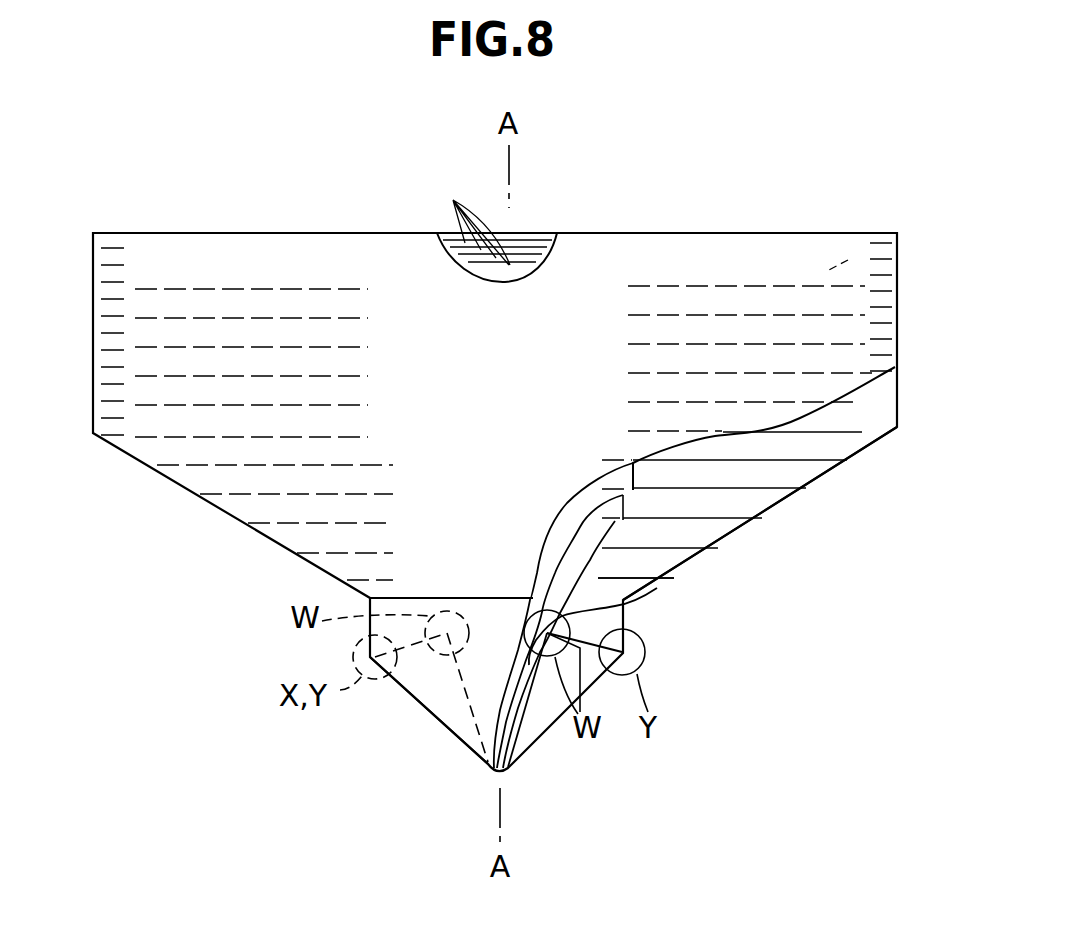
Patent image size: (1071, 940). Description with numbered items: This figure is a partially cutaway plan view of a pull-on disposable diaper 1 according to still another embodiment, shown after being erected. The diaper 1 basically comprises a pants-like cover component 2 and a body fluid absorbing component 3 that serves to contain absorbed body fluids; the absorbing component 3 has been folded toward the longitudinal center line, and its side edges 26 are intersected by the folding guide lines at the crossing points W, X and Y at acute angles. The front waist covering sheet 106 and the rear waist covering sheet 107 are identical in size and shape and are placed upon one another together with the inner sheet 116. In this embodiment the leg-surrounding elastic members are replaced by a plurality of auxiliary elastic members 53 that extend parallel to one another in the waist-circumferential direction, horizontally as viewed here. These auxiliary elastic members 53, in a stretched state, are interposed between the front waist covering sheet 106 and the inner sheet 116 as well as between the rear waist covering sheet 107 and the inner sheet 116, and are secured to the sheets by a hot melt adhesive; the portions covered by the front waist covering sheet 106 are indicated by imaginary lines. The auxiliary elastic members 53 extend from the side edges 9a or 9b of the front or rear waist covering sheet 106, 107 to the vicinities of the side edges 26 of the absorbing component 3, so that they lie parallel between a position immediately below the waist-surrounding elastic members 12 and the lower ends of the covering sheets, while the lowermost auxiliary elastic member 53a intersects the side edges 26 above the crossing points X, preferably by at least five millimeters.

The pull-on disposable diaper 1 is at (657, 158).
The pants-like cover component 2 is at (272, 225).
The body fluid absorbing component 3 is at (417, 714).
The side edges of the front waist covering sheet 9a is at (95, 275).
The side edges of the rear waist covering sheet 9b is at (885, 278).
The waist-surrounding elastic members 12 is at (490, 223).
The side edges of the absorbing component 26 is at (630, 609).
The auxiliary elastic members 53 is at (787, 460).
The lowermost auxiliary elastic member 53a is at (640, 580).
The front waist covering sheet 106 is at (858, 389).
The rear waist covering sheet 107 is at (848, 260).
The inner sheet 116 is at (840, 443).